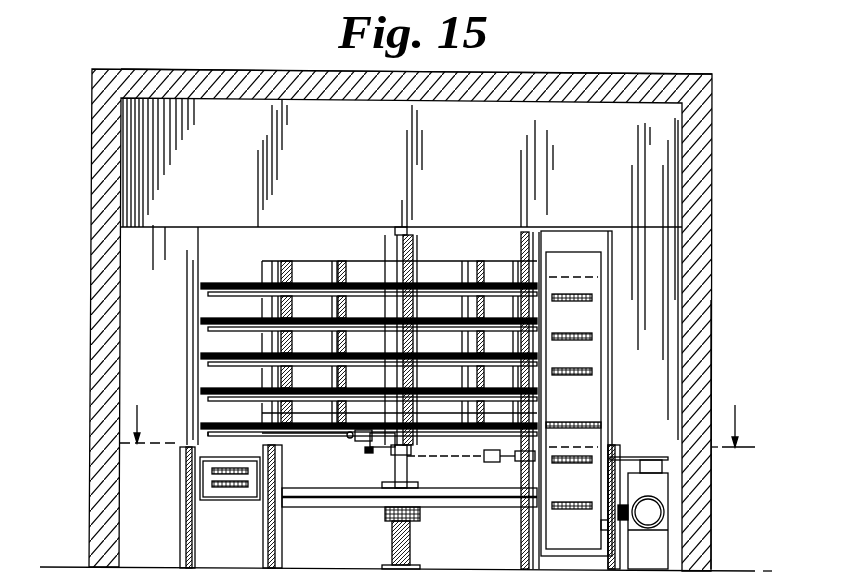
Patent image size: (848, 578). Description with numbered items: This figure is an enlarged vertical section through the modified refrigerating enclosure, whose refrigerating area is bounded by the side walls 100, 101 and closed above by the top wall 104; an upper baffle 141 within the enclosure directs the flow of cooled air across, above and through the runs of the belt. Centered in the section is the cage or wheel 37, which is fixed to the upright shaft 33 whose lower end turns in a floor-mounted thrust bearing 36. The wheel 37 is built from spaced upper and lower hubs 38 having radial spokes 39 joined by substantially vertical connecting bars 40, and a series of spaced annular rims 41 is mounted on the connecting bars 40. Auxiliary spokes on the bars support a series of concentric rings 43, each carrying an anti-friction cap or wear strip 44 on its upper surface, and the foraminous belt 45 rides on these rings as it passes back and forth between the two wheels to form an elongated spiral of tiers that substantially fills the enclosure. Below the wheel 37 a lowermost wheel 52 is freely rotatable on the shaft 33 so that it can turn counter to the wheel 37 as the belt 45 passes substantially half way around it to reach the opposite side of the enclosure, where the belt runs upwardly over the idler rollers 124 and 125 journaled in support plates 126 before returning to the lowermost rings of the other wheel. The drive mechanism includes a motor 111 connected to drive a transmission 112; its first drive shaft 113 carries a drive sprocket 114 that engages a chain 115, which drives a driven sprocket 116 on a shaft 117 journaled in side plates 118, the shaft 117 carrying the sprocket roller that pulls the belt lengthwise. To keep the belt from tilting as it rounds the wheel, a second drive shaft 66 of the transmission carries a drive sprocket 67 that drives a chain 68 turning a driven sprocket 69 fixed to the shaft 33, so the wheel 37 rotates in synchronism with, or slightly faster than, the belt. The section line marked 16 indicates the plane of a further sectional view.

The side wall 100 is at (712, 330).
The side wall 101 is at (92, 318).
The top wall 104 is at (604, 72).
The transmission 112 is at (668, 493).
The upper baffle 141 is at (398, 170).
The belt 45 is at (239, 282).
The connecting bars 40 is at (414, 272).
The radial spokes 39 is at (310, 270).
The annular rims 41 is at (494, 272).
The cage or wheel 37 is at (354, 272).
The concentric rings 43 is at (206, 336).
The anti-friction cap or wear strip 44 is at (372, 426).
The driven sprocket 69 is at (380, 452).
The chain 68 is at (486, 462).
The upright shaft 33 is at (409, 473).
The wheel 52 is at (439, 508).
The hubs 38 is at (385, 515).
The thrust bearings 36 is at (392, 557).
The support plates 126 is at (280, 531).
The idler roller 125 is at (200, 462).
The idler roller 124 is at (200, 490).
The section line 16 is at (443, 418).
The side plates 118 is at (578, 388).
The shaft 117 is at (598, 459).
The chain 115 is at (608, 480).
The drive sprocket 114 is at (618, 514).
The first drive shaft 113 is at (608, 528).
The driven sprocket 116 is at (631, 435).
The drive sprocket 67 is at (660, 464).
The second drive shaft 66 is at (666, 476).
The motor 111 is at (648, 530).